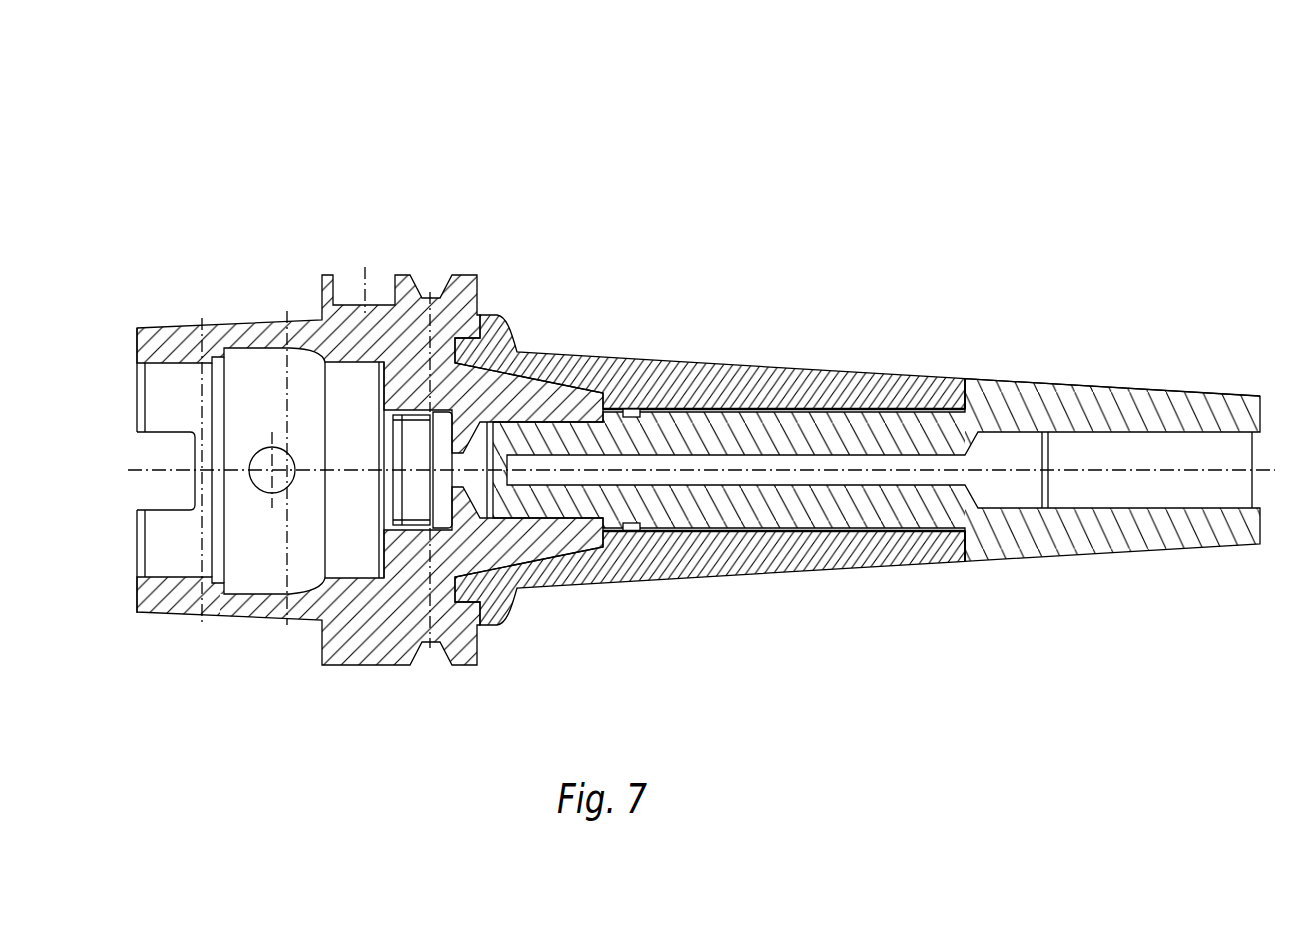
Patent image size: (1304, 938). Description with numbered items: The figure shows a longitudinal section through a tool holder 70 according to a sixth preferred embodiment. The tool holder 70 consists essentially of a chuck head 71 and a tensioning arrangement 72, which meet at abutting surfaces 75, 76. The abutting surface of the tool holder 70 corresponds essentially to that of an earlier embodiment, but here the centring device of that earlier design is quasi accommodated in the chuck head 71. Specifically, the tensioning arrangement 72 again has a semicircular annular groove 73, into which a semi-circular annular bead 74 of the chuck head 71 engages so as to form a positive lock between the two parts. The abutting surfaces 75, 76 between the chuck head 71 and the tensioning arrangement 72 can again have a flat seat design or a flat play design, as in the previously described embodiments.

The tool holder 70 is at (701, 357).
The chuck head 71 is at (1123, 407).
The tensioning arrangement 72 is at (788, 390).
The semicircular annular groove 73 is at (967, 390).
The semi-circular annular bead 74 is at (968, 387).
The abutting surface 75 is at (967, 562).
The abutting surface 76 is at (973, 533).